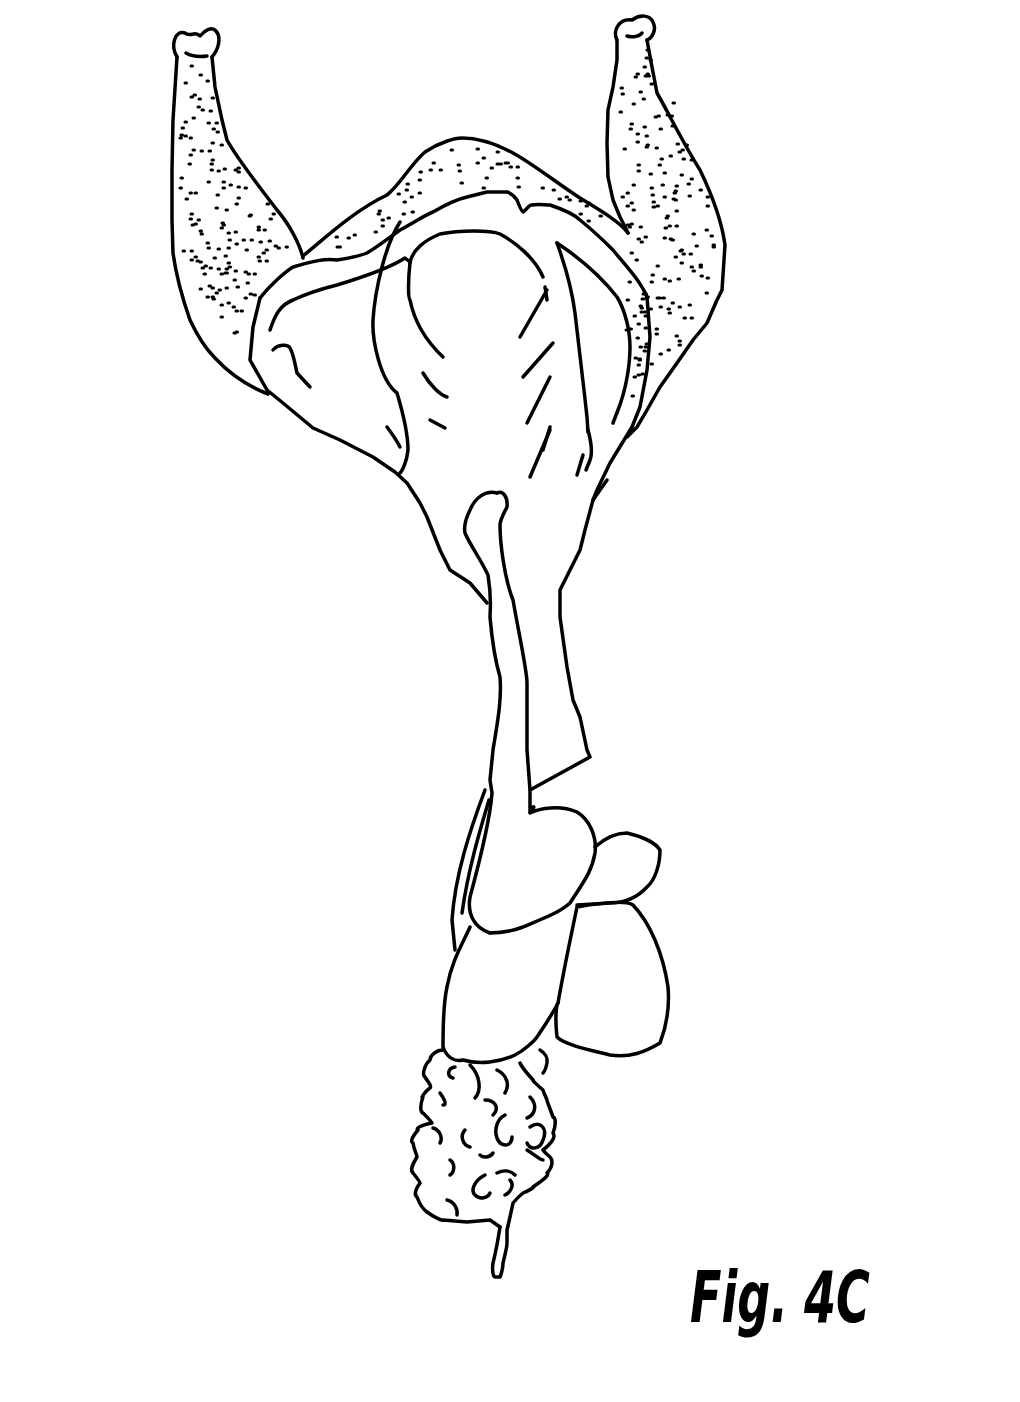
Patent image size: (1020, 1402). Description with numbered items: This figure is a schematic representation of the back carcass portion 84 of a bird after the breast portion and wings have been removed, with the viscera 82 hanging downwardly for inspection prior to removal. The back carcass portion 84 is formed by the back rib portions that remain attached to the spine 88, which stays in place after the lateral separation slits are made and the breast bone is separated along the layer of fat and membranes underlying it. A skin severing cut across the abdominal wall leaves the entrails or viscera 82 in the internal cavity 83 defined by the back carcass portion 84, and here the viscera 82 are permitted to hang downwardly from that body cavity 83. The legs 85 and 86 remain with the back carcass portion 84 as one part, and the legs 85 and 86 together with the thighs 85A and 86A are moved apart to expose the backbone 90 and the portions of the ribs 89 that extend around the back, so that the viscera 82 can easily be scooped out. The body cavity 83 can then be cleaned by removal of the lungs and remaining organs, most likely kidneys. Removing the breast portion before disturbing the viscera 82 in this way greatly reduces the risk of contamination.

The viscera 82 is at (684, 929).
The internal cavity 83 is at (483, 411).
The back carcass portion 84 is at (405, 263).
The left leg 85 is at (187, 180).
The left thigh 85A is at (313, 352).
The right leg 86 is at (652, 150).
The right thigh 86A is at (627, 330).
The spine 88 is at (540, 623).
The ribs 89 is at (560, 407).
The backbone 90 is at (553, 480).